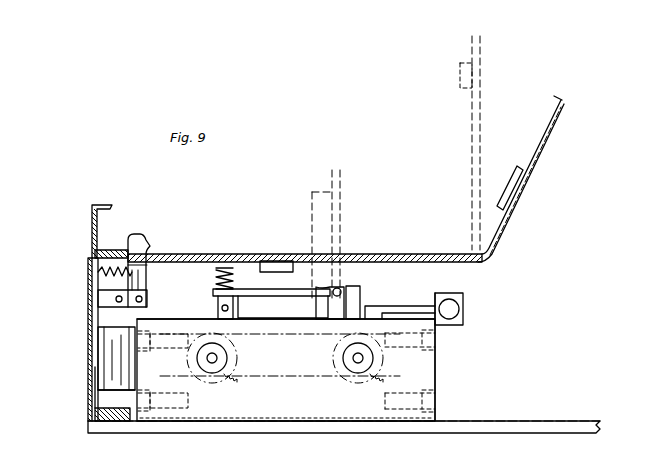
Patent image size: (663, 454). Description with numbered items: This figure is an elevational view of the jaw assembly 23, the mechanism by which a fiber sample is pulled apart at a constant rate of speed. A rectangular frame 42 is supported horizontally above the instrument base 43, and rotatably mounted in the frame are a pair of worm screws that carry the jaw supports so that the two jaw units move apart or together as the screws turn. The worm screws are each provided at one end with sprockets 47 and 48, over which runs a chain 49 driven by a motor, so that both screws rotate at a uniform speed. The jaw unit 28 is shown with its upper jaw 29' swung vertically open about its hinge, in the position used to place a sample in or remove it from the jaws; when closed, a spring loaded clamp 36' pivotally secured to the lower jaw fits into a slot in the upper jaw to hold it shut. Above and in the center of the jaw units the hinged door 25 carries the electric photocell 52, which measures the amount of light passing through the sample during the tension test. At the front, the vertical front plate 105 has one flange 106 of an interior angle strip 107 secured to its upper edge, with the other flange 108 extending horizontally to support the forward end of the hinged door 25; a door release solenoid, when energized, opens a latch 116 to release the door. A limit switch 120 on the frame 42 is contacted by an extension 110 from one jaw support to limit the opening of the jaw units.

The jaw assembly 23 is at (170, 376).
The hinged door 25 is at (170, 253).
The jaw unit 28 is at (244, 290).
The upper jaw 29' is at (286, 302).
The spring loaded clamp 36' is at (198, 279).
The rectangular frame 42 is at (437, 358).
The instrument base 43 is at (475, 420).
The sprocket 47 is at (374, 366).
The sprocket 48 is at (218, 372).
The chain 49 is at (274, 382).
The electric photocell 52 is at (272, 260).
The vertical front plate 105 is at (92, 341).
The flange 106 is at (94, 272).
The interior angle strip 107 is at (94, 256).
The flange 108 is at (116, 246).
The extension 110 is at (392, 305).
The latch 116 is at (134, 240).
The limit switch 120 is at (463, 309).